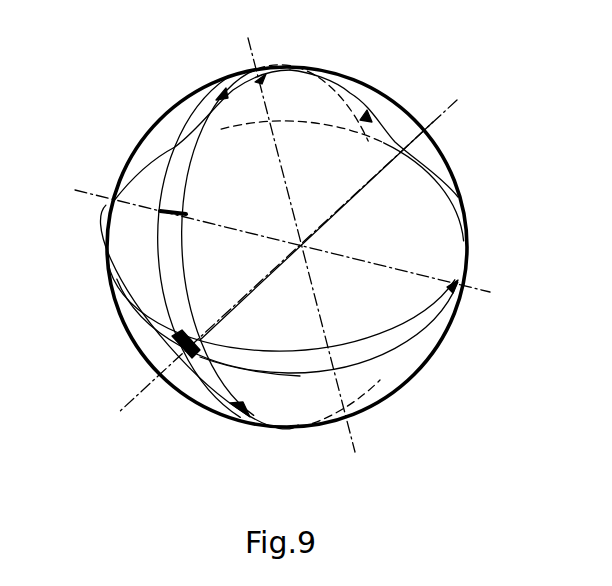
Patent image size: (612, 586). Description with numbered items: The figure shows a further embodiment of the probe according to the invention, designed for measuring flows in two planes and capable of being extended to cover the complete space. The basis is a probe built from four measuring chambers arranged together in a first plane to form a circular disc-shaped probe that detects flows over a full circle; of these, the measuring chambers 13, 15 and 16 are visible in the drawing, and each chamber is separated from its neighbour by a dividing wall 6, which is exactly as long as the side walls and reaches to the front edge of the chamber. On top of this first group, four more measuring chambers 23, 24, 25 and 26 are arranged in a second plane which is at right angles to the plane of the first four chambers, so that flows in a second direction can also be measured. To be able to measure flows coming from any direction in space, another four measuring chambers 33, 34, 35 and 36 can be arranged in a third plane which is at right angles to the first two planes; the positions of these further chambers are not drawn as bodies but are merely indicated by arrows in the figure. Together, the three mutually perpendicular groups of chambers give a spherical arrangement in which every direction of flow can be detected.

The dividing wall 6 is at (177, 203).
The measuring chamber 13 is at (106, 268).
The measuring chamber 15 is at (374, 348).
The measuring chamber 16 is at (267, 370).
The measuring chamber 23 is at (222, 92).
The measuring chamber 24 is at (367, 113).
The measuring chamber 25 is at (368, 383).
The measuring chamber 26 is at (208, 380).
The measuring chamber 33 is at (120, 142).
The measuring chamber 34 is at (470, 128).
The measuring chamber 35 is at (443, 360).
The measuring chamber 36 is at (102, 335).